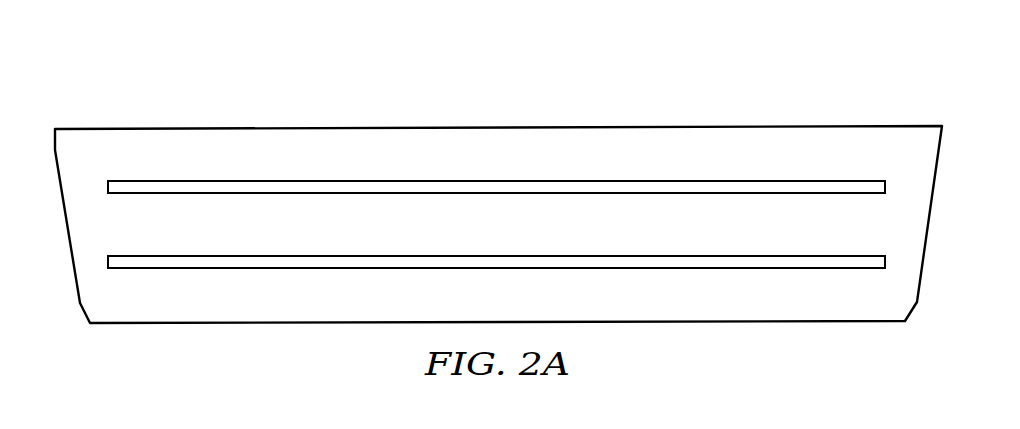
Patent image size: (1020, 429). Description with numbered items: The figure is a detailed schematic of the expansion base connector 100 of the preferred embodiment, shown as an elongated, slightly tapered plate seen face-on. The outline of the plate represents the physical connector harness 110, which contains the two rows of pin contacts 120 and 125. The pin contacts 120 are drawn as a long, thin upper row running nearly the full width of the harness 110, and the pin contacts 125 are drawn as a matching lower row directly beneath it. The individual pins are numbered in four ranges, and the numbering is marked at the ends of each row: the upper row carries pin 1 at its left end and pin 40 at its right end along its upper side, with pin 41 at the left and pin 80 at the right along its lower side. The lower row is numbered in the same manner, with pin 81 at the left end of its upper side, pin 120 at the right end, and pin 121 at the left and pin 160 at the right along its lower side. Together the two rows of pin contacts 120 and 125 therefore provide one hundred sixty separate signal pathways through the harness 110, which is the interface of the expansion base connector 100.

The expansion base connector 100 is at (660, 81).
The physical connector harness 110 is at (303, 128).
The pin contacts 120 is at (347, 193).
The pin contacts 125 is at (648, 256).
The pin 1 is at (107, 175).
The pin 40 is at (885, 174).
The pin 41 is at (114, 207).
The pin 80 is at (879, 205).
The pin 81 is at (110, 250).
The pin 121 is at (110, 281).
The pin 160 is at (882, 280).